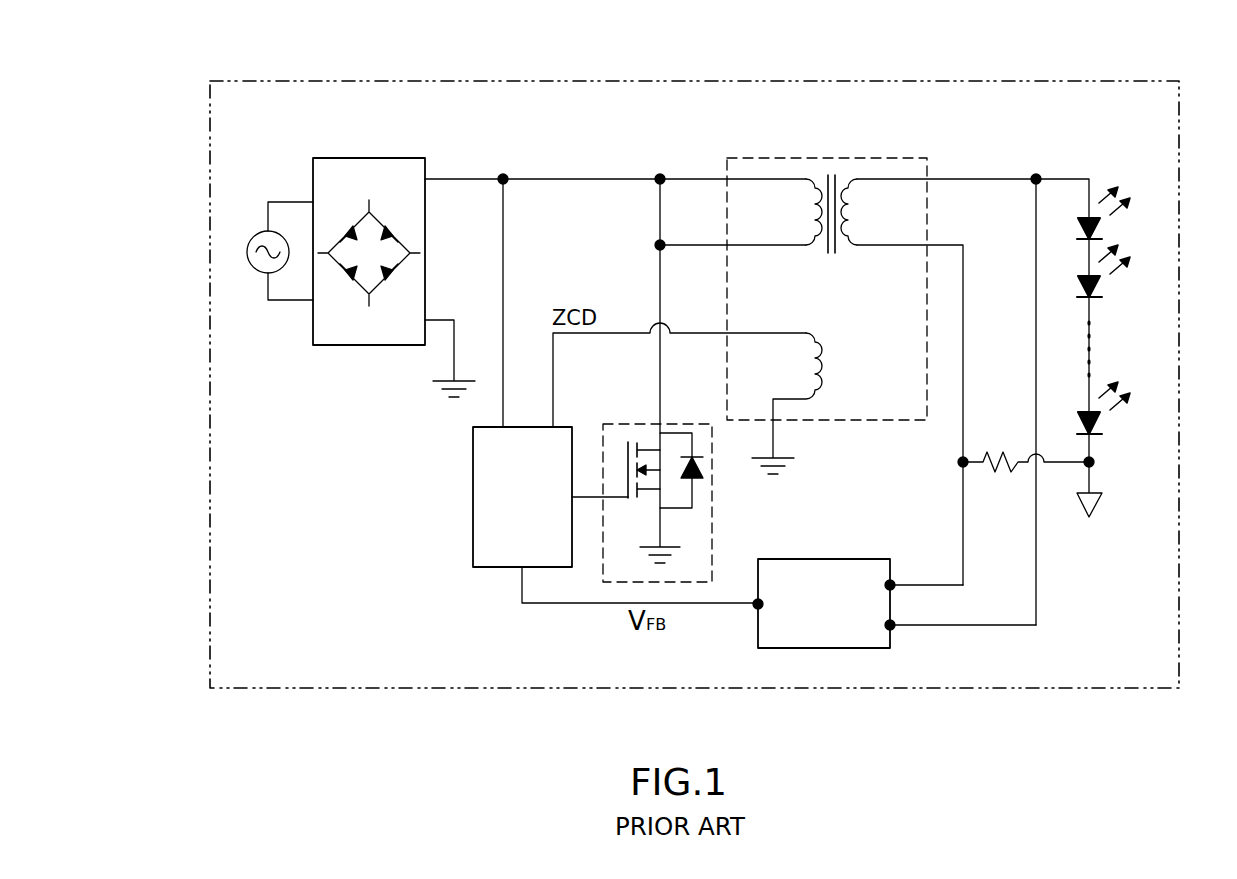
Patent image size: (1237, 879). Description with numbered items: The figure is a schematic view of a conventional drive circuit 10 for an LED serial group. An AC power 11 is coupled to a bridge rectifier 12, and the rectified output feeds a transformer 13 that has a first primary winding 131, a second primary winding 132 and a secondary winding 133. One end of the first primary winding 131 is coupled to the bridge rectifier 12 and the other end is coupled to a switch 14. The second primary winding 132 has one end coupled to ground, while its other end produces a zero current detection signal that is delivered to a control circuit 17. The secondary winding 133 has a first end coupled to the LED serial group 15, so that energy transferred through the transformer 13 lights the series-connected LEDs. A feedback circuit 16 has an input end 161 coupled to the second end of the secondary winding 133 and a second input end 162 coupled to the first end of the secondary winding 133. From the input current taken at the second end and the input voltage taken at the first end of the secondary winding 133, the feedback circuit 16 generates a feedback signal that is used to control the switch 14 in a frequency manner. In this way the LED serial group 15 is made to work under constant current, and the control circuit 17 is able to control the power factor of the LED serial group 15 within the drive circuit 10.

The drive circuit 10 is at (988, 81).
The AC power 11 is at (250, 243).
The bridge rectifier 12 is at (369, 158).
The transformer 13 is at (822, 288).
The first primary winding 131 is at (808, 208).
The second primary winding 132 is at (800, 365).
The secondary winding 133 is at (874, 215).
The switch 14 is at (713, 503).
The LED serial group 15 is at (1110, 332).
The feedback circuit 16 is at (894, 588).
The input end 161 is at (893, 583).
The feedback circuit second terminal 162 is at (893, 628).
The control circuit 17 is at (473, 497).